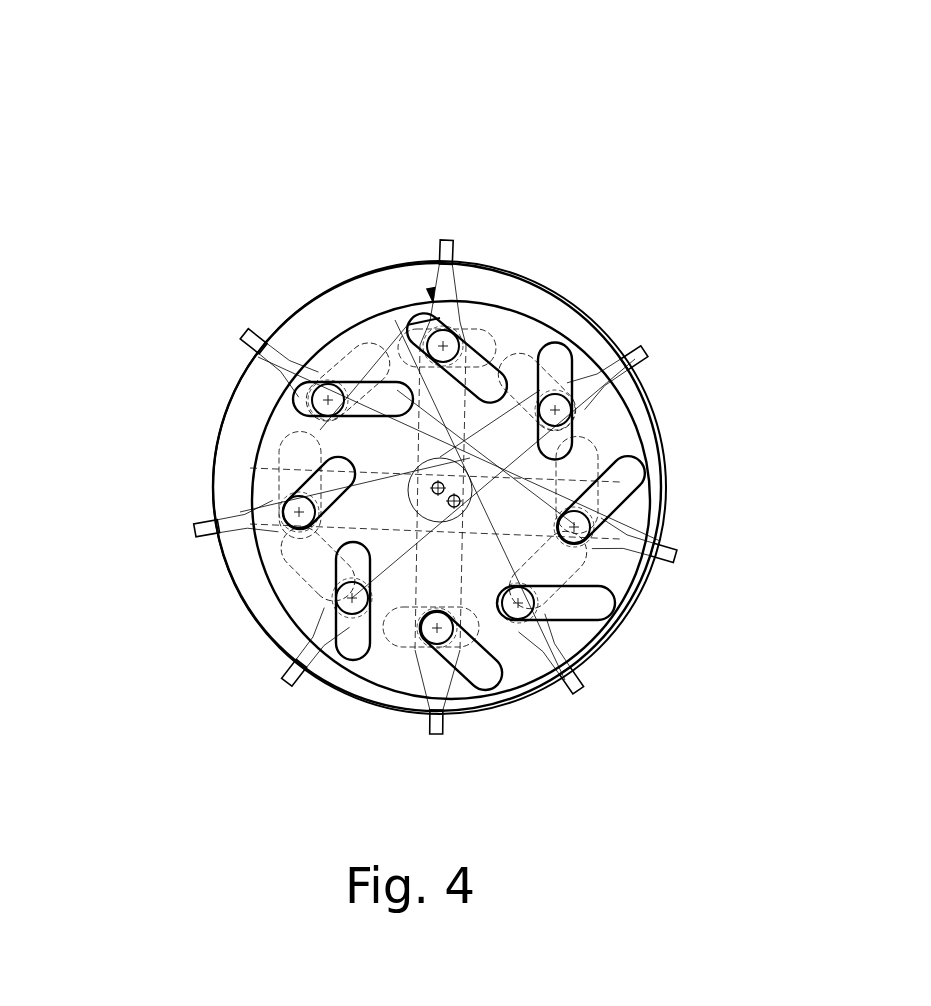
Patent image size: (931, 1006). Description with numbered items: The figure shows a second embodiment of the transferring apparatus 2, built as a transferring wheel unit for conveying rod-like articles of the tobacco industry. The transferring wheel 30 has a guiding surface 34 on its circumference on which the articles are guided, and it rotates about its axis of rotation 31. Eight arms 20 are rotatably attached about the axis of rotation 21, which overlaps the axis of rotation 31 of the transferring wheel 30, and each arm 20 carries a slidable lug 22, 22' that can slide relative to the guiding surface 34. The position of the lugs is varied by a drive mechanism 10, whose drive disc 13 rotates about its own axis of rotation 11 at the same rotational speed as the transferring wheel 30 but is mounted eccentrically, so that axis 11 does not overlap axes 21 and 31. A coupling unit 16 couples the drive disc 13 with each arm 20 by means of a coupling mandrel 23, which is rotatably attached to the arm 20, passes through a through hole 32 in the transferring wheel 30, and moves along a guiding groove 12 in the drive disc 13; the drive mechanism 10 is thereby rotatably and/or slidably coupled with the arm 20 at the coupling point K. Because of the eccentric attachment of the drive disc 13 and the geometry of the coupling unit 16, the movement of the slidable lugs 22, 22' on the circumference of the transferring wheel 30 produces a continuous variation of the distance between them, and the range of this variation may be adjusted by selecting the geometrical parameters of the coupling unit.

The transferring apparatus 2 is at (210, 167).
The drive mechanism 10 is at (263, 572).
The axis of rotation 11 is at (454, 501).
The guiding groove 12 is at (300, 512).
The drive disc 13 is at (298, 598).
The coupling unit 16 is at (433, 302).
The arm 20 is at (625, 538).
The axis of rotation 21 is at (438, 488).
The slidable lug 22 is at (703, 561).
The slidable lug 22' is at (628, 717).
The coupling mandrel 23 is at (443, 347).
The transferring wheel 30 is at (250, 400).
The axis of rotation 31 is at (266, 481).
The through hole 32 is at (397, 390).
The guiding surface 34 is at (625, 617).
The coupling point K is at (443, 346).